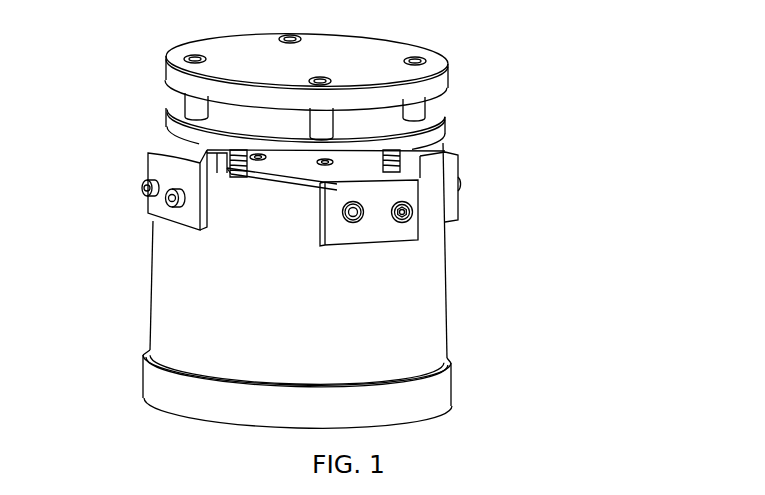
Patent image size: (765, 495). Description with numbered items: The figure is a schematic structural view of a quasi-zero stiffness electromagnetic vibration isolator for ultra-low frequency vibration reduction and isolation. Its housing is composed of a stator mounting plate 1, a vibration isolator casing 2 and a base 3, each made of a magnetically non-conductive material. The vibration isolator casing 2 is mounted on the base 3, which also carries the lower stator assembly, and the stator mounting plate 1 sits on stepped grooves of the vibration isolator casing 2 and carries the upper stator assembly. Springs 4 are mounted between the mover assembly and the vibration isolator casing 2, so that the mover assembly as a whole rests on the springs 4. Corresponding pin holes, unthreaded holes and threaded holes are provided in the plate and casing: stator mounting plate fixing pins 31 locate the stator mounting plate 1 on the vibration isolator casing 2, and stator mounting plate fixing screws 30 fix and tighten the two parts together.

The stator mounting plate 1 is at (157, 159).
The vibration isolator casing 2 is at (233, 268).
The base 3 is at (235, 397).
The springs 4 is at (418, 180).
The stator mounting plate fixing screws 30 is at (407, 217).
The stator mounting plate fixing pins 31 is at (360, 220).